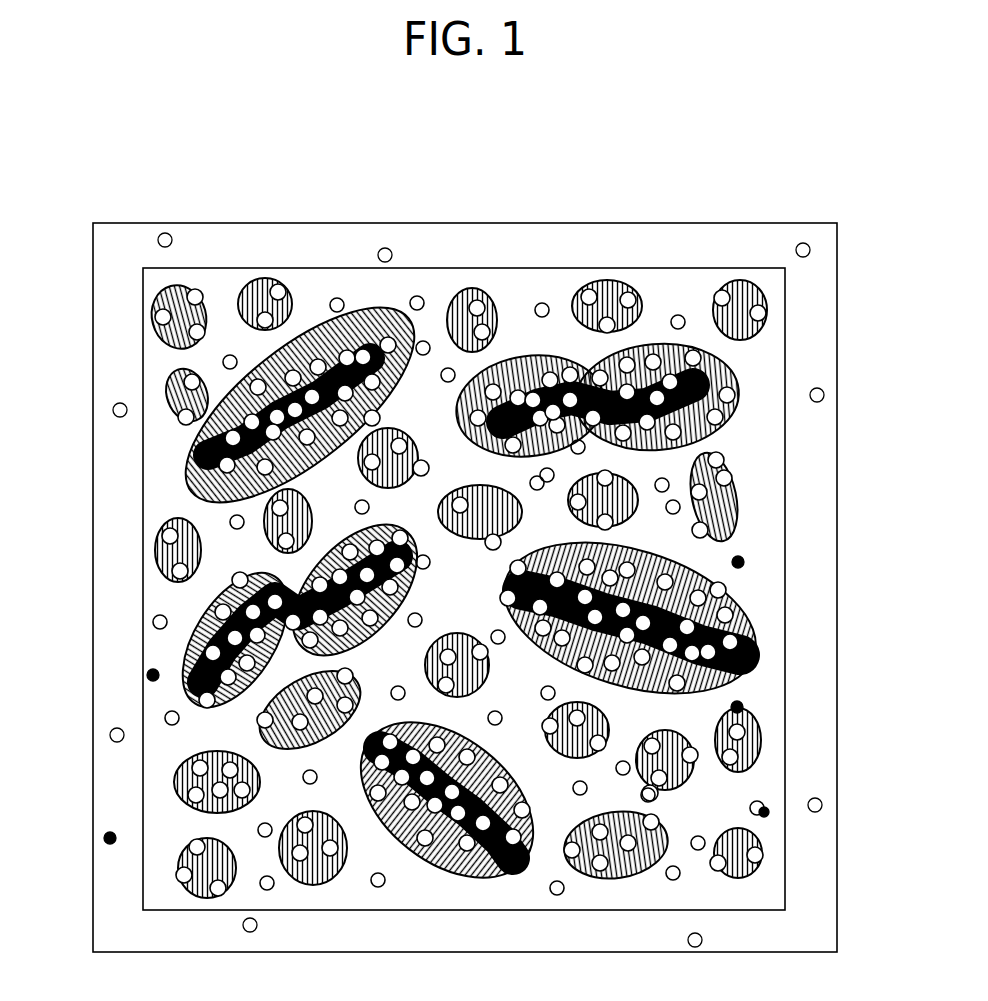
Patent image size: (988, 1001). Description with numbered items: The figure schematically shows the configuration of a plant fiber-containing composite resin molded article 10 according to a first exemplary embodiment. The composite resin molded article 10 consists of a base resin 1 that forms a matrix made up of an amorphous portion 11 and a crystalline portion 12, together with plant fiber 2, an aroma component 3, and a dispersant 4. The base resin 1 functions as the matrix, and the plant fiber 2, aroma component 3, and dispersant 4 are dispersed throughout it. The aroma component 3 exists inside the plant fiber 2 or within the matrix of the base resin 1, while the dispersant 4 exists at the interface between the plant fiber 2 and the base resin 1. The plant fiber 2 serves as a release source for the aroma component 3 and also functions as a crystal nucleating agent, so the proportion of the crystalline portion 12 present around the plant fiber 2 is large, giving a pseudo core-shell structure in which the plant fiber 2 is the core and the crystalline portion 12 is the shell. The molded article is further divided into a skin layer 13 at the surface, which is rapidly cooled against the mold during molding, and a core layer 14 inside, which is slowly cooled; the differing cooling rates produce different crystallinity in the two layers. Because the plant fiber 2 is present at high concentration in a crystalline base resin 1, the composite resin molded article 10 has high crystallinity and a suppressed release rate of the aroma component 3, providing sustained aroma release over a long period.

The plant fiber-containing composite resin molded article 10 is at (804, 159).
The base resin 1 is at (740, 448).
The plant fiber 2 is at (695, 383).
The dispersant 4 is at (745, 652).
The amorphous portion 11 is at (738, 562).
The crystalline portion 12 is at (737, 707).
The aroma component 3 is at (764, 812).
The core layer 14 is at (153, 675).
The skin layer 13 is at (110, 838).